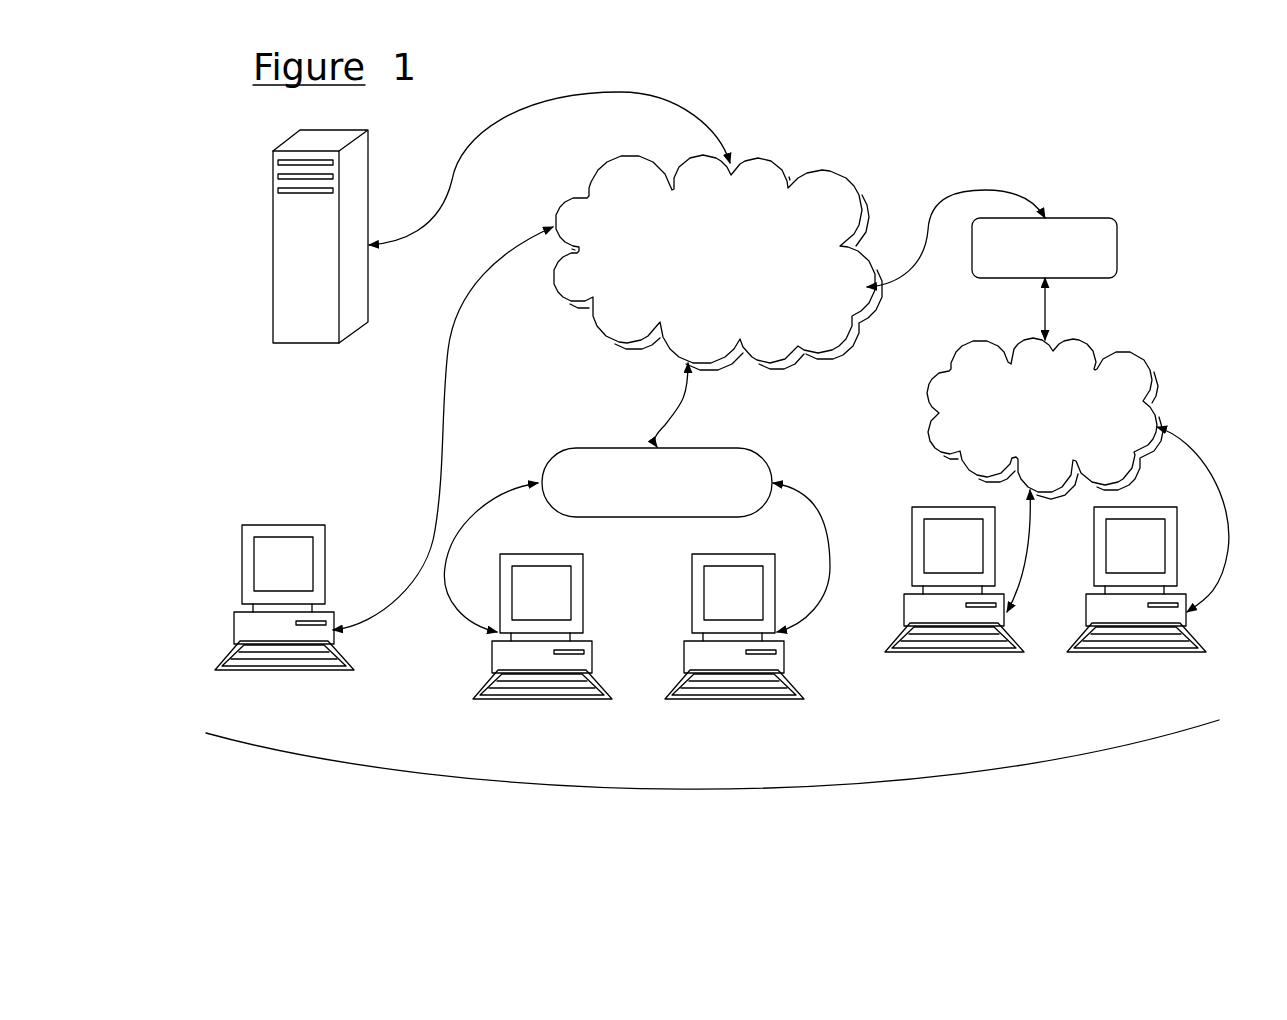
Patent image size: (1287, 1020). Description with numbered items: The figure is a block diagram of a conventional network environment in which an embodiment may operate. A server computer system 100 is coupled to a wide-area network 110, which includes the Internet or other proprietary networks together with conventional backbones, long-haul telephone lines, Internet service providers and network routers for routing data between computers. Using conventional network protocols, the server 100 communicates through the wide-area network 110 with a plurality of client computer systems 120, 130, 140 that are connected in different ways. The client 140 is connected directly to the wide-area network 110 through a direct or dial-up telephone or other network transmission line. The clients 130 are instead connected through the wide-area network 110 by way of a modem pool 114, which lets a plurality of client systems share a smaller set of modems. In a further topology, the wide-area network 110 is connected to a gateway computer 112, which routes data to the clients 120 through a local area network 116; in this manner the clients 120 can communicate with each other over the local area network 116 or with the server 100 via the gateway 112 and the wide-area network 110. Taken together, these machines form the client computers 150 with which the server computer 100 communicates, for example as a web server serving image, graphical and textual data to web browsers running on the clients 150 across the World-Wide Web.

The server computer system 100 is at (273, 160).
The wide-area network 110 is at (778, 163).
The gateway computer 112 is at (1085, 215).
The modem pool 114 is at (625, 445).
The local area network 116 is at (1107, 342).
The client computer systems 120 is at (942, 510).
The client computer systems 130 is at (488, 657).
The client computer system 140 is at (278, 515).
The client computers 150 is at (712, 785).